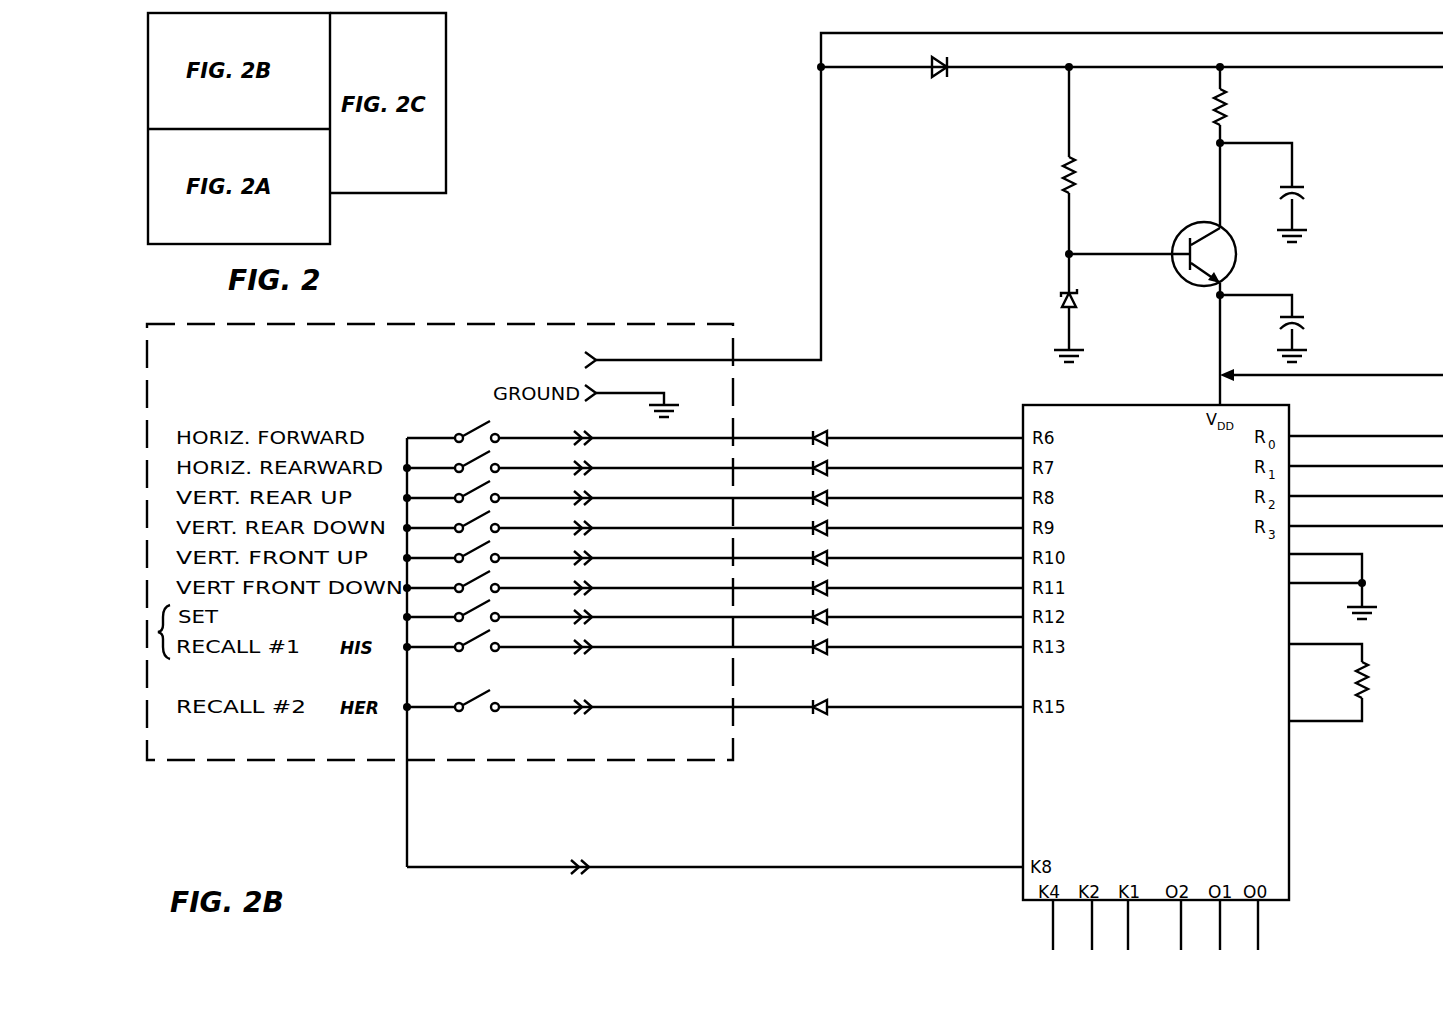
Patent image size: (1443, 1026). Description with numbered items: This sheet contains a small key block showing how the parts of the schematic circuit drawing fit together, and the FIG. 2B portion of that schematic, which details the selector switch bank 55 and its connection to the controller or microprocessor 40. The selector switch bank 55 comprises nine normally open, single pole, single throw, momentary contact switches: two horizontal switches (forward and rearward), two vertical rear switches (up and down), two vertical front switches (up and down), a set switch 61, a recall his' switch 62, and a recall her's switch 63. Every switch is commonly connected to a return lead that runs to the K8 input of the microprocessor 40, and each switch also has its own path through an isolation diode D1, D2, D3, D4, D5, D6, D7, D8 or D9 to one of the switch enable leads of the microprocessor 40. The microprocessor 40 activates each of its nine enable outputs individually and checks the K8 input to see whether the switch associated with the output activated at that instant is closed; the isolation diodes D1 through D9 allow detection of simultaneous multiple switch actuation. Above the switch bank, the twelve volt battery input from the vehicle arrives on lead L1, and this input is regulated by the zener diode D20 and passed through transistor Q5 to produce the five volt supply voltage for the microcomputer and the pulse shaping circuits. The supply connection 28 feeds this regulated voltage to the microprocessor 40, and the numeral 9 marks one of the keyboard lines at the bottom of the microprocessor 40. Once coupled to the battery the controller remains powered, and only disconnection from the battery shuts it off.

The selector switch bank 55 is at (661, 761).
The set switch 61 is at (499, 612).
The recall his' switch 62 is at (499, 642).
The recall her's switch 63 is at (499, 702).
The controller or microprocessor (MPU) 40 is at (1305, 812).
The supply voltage line 28 is at (1331, 344).
The K4 keyboard line 9 is at (1061, 925).
The lead L1 is at (640, 358).
The K8 input K8 is at (828, 868).
The isolation diode D1 is at (835, 434).
The isolation diode D2 is at (835, 464).
The isolation diode D3 is at (835, 494).
The isolation diode D4 is at (835, 524).
The isolation diode D5 is at (835, 554).
The isolation diode D6 is at (835, 584).
The isolation diode D7 is at (835, 613).
The isolation diode D8 is at (835, 643).
The isolation diode D9 is at (835, 703).
The zener diode D20 is at (1060, 300).
The transistor Q5 is at (1196, 284).